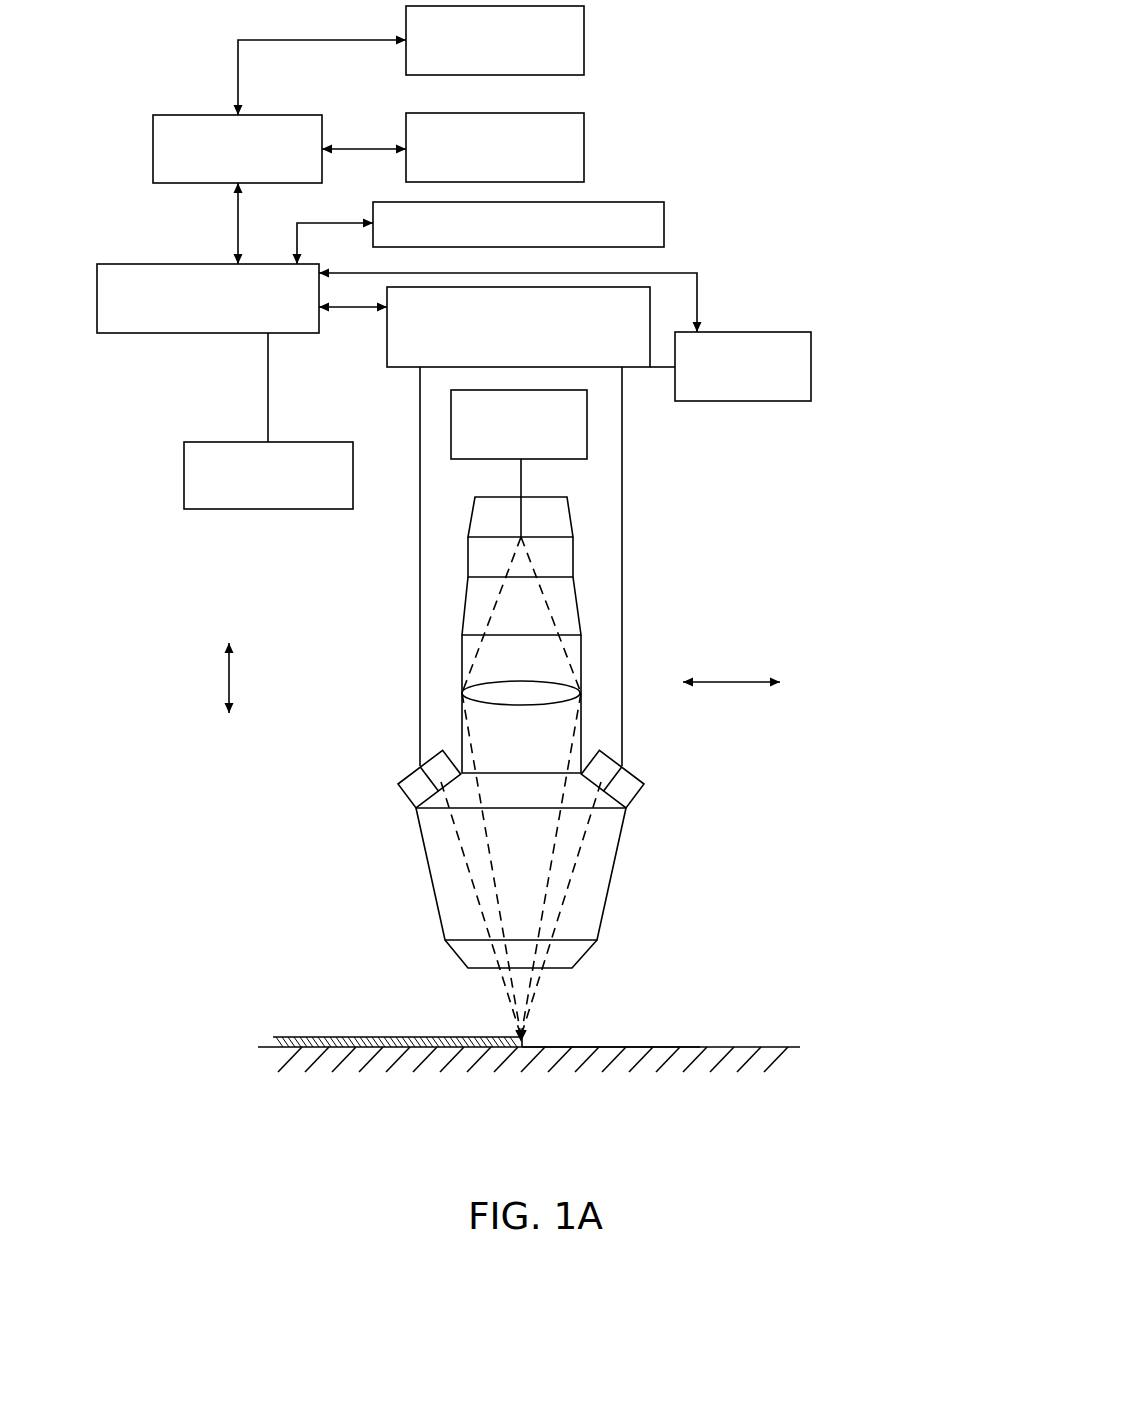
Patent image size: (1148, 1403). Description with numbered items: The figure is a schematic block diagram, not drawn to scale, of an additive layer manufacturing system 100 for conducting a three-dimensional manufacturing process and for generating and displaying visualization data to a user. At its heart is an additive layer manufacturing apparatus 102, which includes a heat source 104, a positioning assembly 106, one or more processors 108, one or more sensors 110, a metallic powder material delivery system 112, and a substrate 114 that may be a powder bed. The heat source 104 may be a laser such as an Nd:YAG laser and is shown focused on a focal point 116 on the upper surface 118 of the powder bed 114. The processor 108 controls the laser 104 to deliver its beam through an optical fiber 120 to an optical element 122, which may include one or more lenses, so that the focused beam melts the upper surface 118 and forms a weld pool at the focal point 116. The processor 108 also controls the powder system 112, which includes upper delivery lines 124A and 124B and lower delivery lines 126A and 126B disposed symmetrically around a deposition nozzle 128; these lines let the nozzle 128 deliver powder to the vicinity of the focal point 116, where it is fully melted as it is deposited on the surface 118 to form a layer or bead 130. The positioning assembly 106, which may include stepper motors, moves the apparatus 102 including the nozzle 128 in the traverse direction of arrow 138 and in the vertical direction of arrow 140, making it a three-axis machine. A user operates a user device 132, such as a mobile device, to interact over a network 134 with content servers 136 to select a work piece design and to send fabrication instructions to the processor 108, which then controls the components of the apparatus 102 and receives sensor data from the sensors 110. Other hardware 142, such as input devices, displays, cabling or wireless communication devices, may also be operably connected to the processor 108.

The additive layer manufacturing system 100 is at (783, 140).
The additive layer manufacturing apparatus 102 is at (701, 296).
The heat source 104 is at (587, 445).
The positioning assembly 106 is at (387, 352).
The processor 108 is at (115, 264).
The sensor 110 is at (311, 509).
The metallic powder material delivery system 112 is at (811, 367).
The substrate 114 is at (735, 1047).
The focal point 116 is at (521, 1050).
The upper surface 118 is at (630, 1047).
The optical fiber 120 is at (521, 477).
The optical element 122 is at (553, 703).
The upper delivery line 124A is at (420, 615).
The upper delivery line 124B is at (622, 580).
The lower delivery line 126A is at (455, 857).
The lower delivery line 126B is at (587, 857).
The deposition nozzle 128 is at (470, 967).
The bead 130 is at (298, 1037).
The user device 132 is at (584, 40).
The network 134 is at (179, 115).
The content server 136 is at (584, 147).
The arrow 138 is at (738, 683).
The arrow 140 is at (229, 685).
The other hardware 142 is at (664, 227).